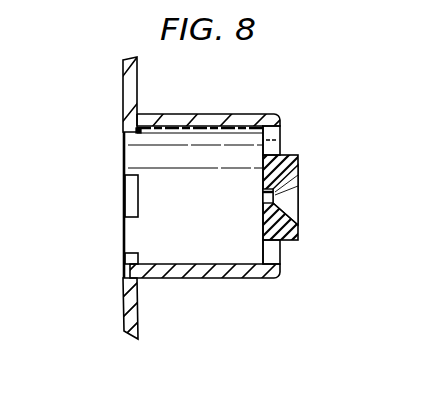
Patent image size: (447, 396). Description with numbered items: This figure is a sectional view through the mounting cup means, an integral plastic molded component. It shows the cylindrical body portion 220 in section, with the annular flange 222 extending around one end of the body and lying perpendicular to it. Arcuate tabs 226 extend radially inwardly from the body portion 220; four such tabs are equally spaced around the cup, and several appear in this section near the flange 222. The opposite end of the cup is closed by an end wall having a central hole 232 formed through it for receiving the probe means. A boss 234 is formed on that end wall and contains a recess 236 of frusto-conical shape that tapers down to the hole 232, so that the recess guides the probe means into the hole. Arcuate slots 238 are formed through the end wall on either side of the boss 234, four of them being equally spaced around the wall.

The cylindrical body portion 220 is at (200, 280).
The annular flange 222 is at (123, 313).
The arcuate tabs 226 is at (138, 131).
The central hole 232 is at (263, 197).
The boss 234 is at (300, 160).
The recess 236 is at (288, 222).
The arcuate slots 238 is at (279, 141).